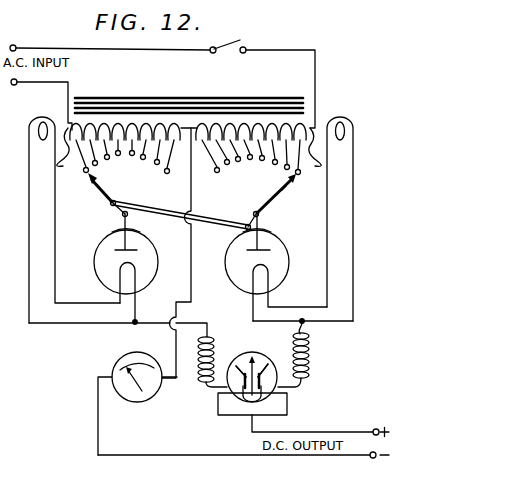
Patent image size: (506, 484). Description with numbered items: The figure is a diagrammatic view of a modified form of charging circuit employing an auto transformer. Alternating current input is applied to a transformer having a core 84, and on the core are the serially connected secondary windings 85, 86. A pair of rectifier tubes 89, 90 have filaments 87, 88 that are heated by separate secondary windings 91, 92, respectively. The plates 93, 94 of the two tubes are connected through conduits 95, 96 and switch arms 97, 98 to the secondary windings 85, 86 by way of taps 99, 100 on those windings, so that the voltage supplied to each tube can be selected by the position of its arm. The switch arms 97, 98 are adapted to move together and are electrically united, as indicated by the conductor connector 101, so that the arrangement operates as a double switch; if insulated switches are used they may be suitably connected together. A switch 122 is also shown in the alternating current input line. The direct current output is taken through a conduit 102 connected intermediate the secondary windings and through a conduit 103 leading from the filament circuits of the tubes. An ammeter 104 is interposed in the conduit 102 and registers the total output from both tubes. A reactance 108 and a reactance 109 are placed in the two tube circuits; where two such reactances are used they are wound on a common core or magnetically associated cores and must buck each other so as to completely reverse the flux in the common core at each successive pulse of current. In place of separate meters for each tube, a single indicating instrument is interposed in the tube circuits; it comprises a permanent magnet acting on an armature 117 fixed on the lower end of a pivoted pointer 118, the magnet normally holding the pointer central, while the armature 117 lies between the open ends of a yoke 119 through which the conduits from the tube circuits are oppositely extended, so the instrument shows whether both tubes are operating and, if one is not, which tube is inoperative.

The switch 122 is at (237, 43).
The core 84 is at (247, 97).
The secondary winding 91 is at (38, 133).
The secondary winding 92 is at (350, 133).
The tap 99 is at (125, 161).
The tap 100 is at (271, 164).
The secondary winding 85 is at (92, 184).
The secondary winding 86 is at (282, 200).
The switch arm 98 is at (282, 190).
The switch arm 97 is at (111, 204).
The conduit 96 is at (261, 216).
The conduit 95 is at (143, 211).
The conductor connector 101 is at (137, 206).
The filament 87 is at (120, 280).
The filament 88 is at (268, 279).
The plate 93 is at (119, 244).
The plate 94 is at (245, 224).
The rectifier tube 89 is at (141, 232).
The rectifier tube 90 is at (278, 232).
The reactance 108 is at (198, 385).
The reactance 109 is at (317, 372).
The ammeter 104 is at (122, 400).
The armature 117 is at (246, 352).
The pointer 118 is at (250, 364).
The yoke 119 is at (263, 372).
The conduit 103 is at (345, 435).
The conduit 102 is at (304, 456).